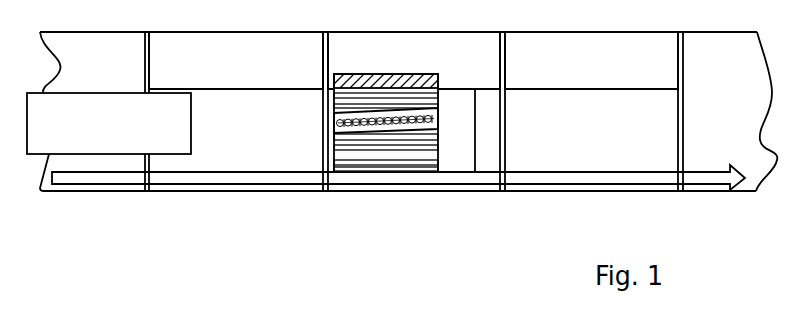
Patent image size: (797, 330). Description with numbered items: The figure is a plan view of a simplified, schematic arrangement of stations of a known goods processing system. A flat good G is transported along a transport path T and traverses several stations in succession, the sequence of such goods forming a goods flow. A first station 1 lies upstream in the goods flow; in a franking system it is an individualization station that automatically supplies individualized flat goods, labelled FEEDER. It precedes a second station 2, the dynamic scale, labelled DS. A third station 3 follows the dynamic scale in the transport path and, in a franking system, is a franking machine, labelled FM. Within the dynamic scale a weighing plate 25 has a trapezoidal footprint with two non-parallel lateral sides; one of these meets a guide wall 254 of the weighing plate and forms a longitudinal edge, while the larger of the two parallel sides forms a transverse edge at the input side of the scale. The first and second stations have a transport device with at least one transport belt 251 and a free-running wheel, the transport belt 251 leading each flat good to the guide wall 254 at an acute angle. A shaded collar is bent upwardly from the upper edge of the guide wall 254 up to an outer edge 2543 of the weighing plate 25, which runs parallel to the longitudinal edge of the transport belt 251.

The first station 1 is at (265, 45).
The second station 2 is at (438, 48).
The third station 3 is at (628, 47).
The flat good G is at (98, 138).
The transport path T is at (220, 177).
The weighing plate 25 is at (413, 155).
The transport belt 251 is at (362, 124).
The guide wall 254 is at (398, 83).
The outer edge 2543 is at (408, 74).